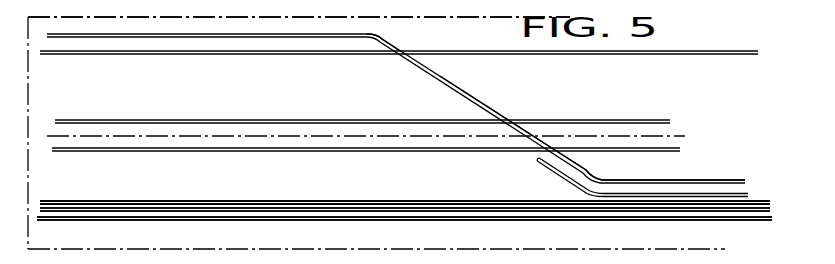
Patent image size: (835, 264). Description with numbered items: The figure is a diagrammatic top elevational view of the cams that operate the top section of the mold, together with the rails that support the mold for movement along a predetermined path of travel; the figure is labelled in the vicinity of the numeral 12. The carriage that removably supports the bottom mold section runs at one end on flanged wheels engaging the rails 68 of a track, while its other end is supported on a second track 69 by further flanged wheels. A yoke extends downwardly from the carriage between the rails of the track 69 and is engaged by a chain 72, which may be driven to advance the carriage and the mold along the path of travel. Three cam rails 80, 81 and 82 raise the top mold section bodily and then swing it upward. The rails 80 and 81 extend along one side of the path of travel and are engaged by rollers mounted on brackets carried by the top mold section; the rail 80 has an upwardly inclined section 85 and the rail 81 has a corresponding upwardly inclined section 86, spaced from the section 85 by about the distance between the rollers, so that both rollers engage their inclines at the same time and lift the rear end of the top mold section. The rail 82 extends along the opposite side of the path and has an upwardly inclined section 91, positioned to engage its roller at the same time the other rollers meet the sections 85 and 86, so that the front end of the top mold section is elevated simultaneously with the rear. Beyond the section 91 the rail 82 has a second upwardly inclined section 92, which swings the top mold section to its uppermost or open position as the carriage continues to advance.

The vehicle body 12 is at (299, 8).
The rails 68 is at (377, 54).
The second track 69 is at (217, 149).
The chain 72 is at (336, 136).
The cam rail 80 is at (384, 203).
The cam rail 81 is at (249, 207).
The cam rail 82 is at (246, 37).
The upwardly inclined section 85 is at (157, 202).
The upwardly inclined section 86 is at (476, 219).
The upwardly inclined section 91 is at (376, 32).
The second upwardly inclined section 92 is at (487, 106).